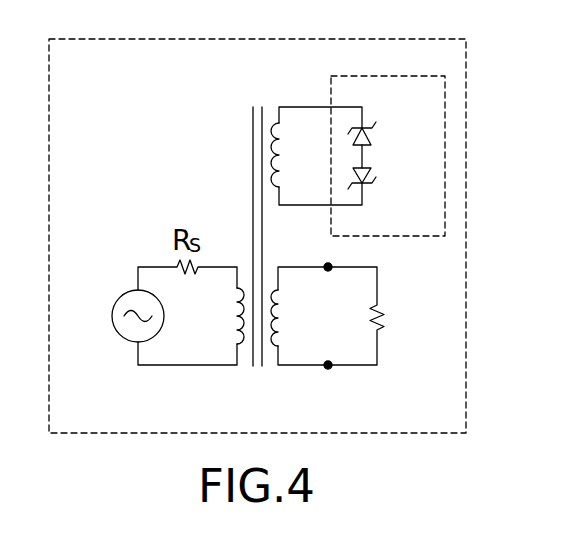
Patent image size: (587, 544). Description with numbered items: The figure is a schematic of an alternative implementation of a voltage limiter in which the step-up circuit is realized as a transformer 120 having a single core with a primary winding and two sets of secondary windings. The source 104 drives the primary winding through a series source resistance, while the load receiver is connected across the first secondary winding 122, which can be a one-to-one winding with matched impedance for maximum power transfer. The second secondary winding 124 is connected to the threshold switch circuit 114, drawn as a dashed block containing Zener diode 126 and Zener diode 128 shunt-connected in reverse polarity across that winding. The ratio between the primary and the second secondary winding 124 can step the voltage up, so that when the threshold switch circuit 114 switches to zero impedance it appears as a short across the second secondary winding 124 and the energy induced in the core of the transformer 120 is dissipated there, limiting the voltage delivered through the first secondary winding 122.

The source 104 is at (128, 291).
The threshold switch circuit 114 is at (445, 129).
The transformer 120 is at (213, 184).
The first secondary winding 122 is at (272, 367).
The second secondary winding 124 is at (268, 107).
The Zener diode 126 is at (371, 127).
The Zener diode 128 is at (371, 184).